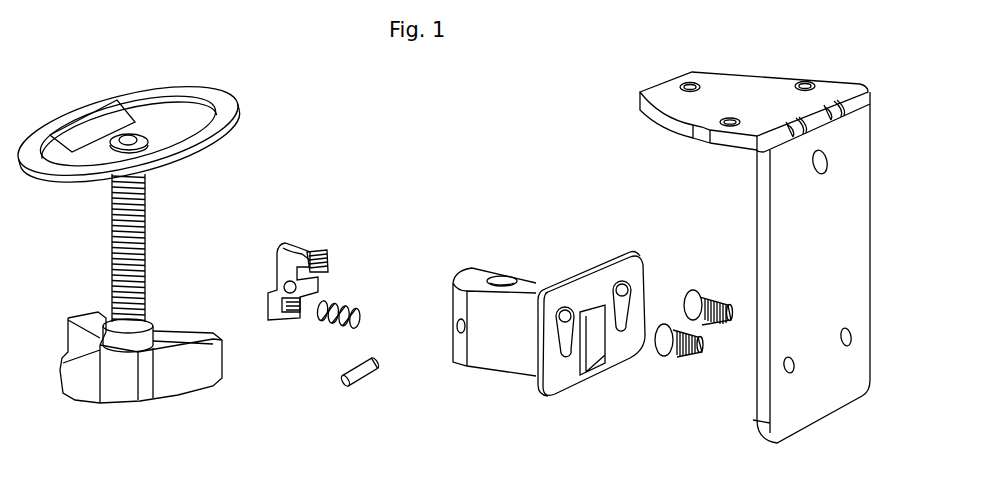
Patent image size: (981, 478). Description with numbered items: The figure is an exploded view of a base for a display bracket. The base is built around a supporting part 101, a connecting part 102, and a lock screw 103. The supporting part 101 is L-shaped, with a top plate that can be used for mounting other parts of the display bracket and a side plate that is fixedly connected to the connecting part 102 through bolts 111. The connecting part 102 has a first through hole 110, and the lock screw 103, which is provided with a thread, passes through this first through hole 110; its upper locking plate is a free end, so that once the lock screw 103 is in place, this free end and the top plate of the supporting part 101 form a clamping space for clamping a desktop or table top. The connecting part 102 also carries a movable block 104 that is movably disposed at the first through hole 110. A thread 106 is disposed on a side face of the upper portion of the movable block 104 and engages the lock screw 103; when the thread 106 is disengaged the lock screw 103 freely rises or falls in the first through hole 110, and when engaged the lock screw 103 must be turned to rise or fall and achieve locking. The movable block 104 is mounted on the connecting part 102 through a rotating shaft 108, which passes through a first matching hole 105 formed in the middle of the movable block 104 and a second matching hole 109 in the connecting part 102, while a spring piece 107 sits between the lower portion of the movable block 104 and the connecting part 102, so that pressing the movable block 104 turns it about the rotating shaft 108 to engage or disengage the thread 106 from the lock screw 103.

The supporting part 101 is at (838, 245).
The connecting part 102 is at (524, 295).
The lock screw 103 is at (145, 237).
The movable block 104 is at (291, 266).
The first matching hole 105 is at (297, 300).
The thread 106 is at (328, 252).
The spring piece 107 is at (350, 305).
The rotating shaft 108 is at (368, 377).
The second matching hole 109 is at (457, 322).
The first through hole 110 is at (505, 280).
The bolts 111 is at (702, 290).